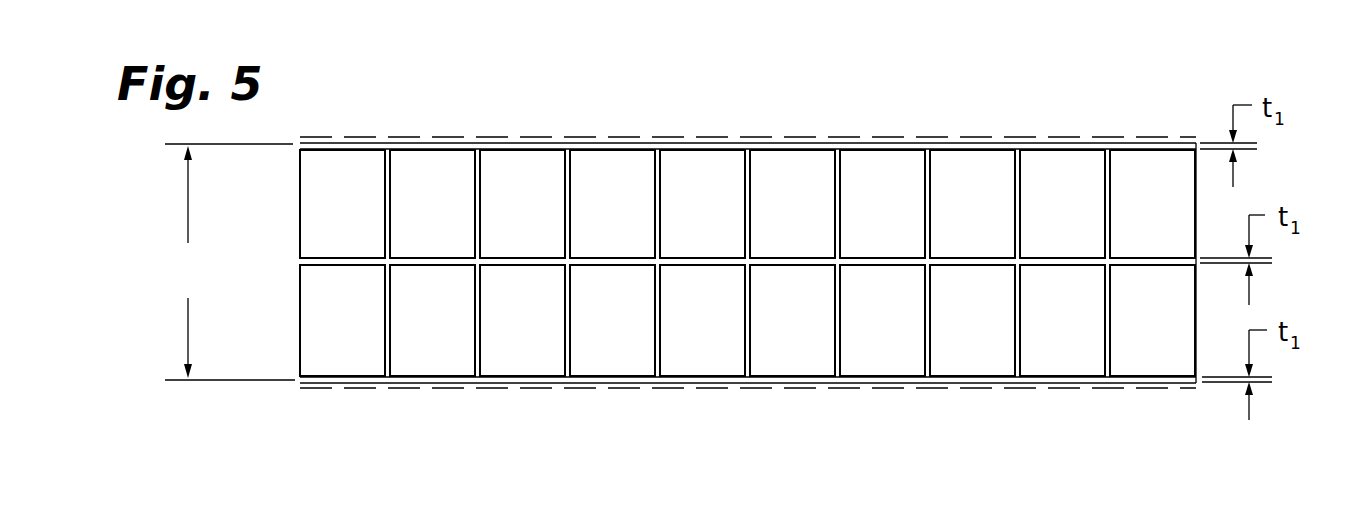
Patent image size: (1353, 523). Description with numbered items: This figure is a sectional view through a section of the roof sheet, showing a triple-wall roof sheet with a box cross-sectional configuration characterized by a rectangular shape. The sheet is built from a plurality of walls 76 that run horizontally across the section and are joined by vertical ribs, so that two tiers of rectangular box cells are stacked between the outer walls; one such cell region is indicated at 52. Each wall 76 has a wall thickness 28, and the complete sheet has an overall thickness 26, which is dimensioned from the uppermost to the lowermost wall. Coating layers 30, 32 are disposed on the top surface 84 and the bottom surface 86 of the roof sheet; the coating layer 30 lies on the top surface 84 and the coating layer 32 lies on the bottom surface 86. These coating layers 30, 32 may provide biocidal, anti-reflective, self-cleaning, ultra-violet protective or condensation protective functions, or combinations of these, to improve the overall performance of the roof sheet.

The overall thickness 26 is at (188, 217).
The wall thickness 28 is at (1249, 296).
The coating layer 30 is at (472, 140).
The coating layer 32 is at (410, 386).
The core cell 52 is at (785, 170).
The wall 76 is at (620, 148).
The top surface 84 is at (1195, 140).
The bottom surface 86 is at (300, 386).